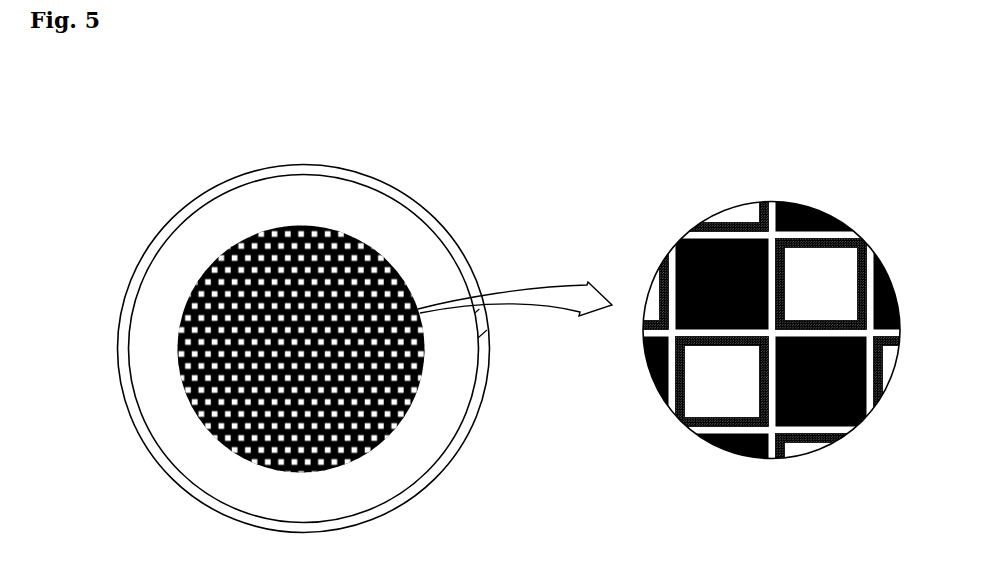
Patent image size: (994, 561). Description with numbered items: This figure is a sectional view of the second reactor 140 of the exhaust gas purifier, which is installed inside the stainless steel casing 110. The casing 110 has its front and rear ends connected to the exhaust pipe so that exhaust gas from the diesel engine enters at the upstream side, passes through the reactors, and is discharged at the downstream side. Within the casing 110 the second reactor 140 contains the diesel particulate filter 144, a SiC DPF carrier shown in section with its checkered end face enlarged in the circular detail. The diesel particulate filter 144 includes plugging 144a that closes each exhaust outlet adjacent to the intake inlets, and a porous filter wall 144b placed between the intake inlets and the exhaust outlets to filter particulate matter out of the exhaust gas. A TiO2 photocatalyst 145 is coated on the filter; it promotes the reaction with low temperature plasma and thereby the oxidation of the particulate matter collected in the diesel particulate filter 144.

The casing 110 is at (192, 208).
The second reactor 140 is at (405, 236).
The diesel particulate filter 144 is at (504, 333).
The plugging 144a is at (680, 240).
The porous filter wall 144b is at (772, 260).
The photocatalyst 145 is at (822, 322).